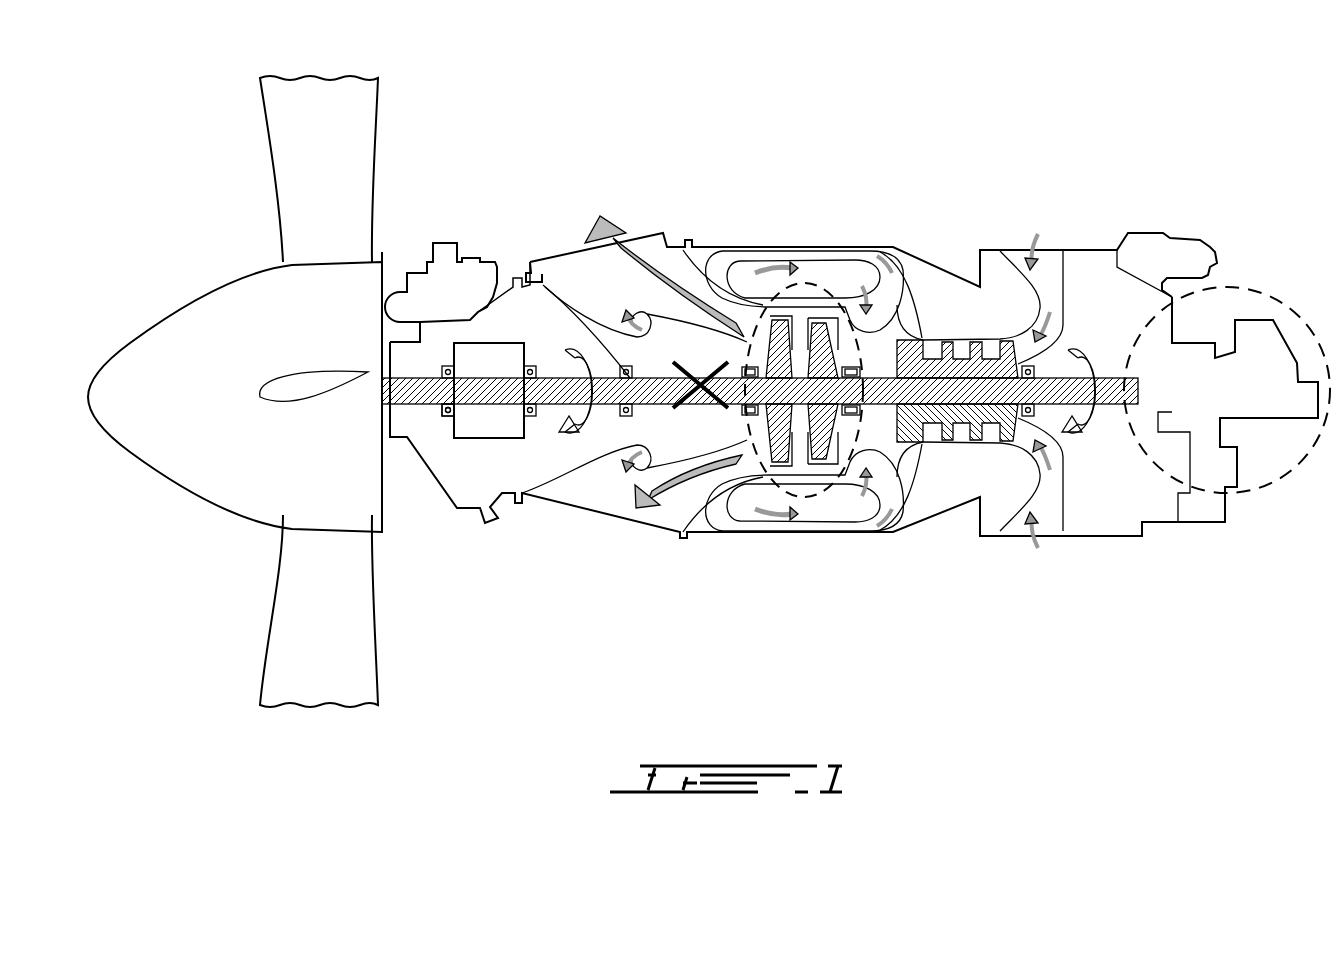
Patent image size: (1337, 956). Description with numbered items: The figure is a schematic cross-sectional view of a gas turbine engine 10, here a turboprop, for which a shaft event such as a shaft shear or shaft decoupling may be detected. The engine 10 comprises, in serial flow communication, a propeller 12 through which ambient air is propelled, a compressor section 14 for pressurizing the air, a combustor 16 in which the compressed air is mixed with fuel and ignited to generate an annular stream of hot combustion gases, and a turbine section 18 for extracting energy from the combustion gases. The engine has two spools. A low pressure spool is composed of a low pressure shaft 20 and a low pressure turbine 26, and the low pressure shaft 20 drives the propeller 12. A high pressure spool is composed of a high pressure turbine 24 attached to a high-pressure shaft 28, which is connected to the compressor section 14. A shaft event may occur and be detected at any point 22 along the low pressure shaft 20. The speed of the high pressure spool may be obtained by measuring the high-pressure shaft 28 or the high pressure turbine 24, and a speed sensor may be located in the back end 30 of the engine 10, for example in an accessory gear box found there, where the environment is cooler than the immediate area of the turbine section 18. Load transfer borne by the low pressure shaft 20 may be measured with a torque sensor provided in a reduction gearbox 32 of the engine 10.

The gas turbine engine 10 is at (1014, 128).
The propeller 12 is at (246, 257).
The compressor section 14 is at (952, 452).
The combustor 16 is at (819, 277).
The turbine section 18 is at (752, 445).
The low pressure shaft 20 is at (485, 392).
The point along the low pressure shaft 22 is at (603, 380).
The high pressure turbine 24 is at (823, 448).
The low pressure turbine 26 is at (778, 448).
The high-pressure shaft 28 is at (895, 318).
The back end 30 is at (1260, 288).
The reduction gearbox 32 is at (452, 425).